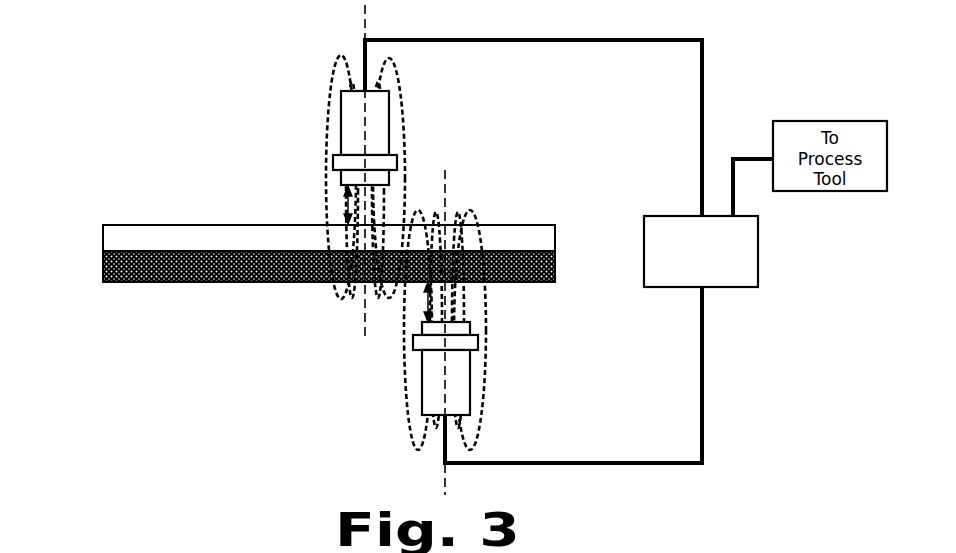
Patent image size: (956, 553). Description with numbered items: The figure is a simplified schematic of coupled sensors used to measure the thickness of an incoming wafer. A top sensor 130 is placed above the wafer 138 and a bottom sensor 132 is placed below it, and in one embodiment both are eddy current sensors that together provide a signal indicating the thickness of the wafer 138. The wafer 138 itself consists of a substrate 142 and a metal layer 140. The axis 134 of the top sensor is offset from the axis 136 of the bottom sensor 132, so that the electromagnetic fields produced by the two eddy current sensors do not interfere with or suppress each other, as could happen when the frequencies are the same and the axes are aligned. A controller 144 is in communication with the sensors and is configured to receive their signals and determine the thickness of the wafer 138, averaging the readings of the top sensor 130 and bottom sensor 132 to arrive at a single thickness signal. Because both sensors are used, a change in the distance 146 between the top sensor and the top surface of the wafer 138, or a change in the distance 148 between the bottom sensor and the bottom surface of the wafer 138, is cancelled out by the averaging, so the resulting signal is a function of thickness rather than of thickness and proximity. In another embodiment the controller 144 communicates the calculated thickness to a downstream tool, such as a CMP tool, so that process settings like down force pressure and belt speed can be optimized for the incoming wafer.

The top sensor 130 is at (330, 106).
The bottom sensor 132 is at (420, 404).
The axis of top sensor 134 is at (360, 315).
The axis of bottom sensor 136 is at (452, 193).
The wafer 138 is at (333, 247).
The metal layer 140 is at (103, 265).
The substrate 142 is at (103, 237).
The controller 144 is at (741, 287).
The distance between top sensor and top surface of wafer 146 is at (342, 210).
The distance between bottom sensor and bottom surface of wafer 148 is at (430, 300).